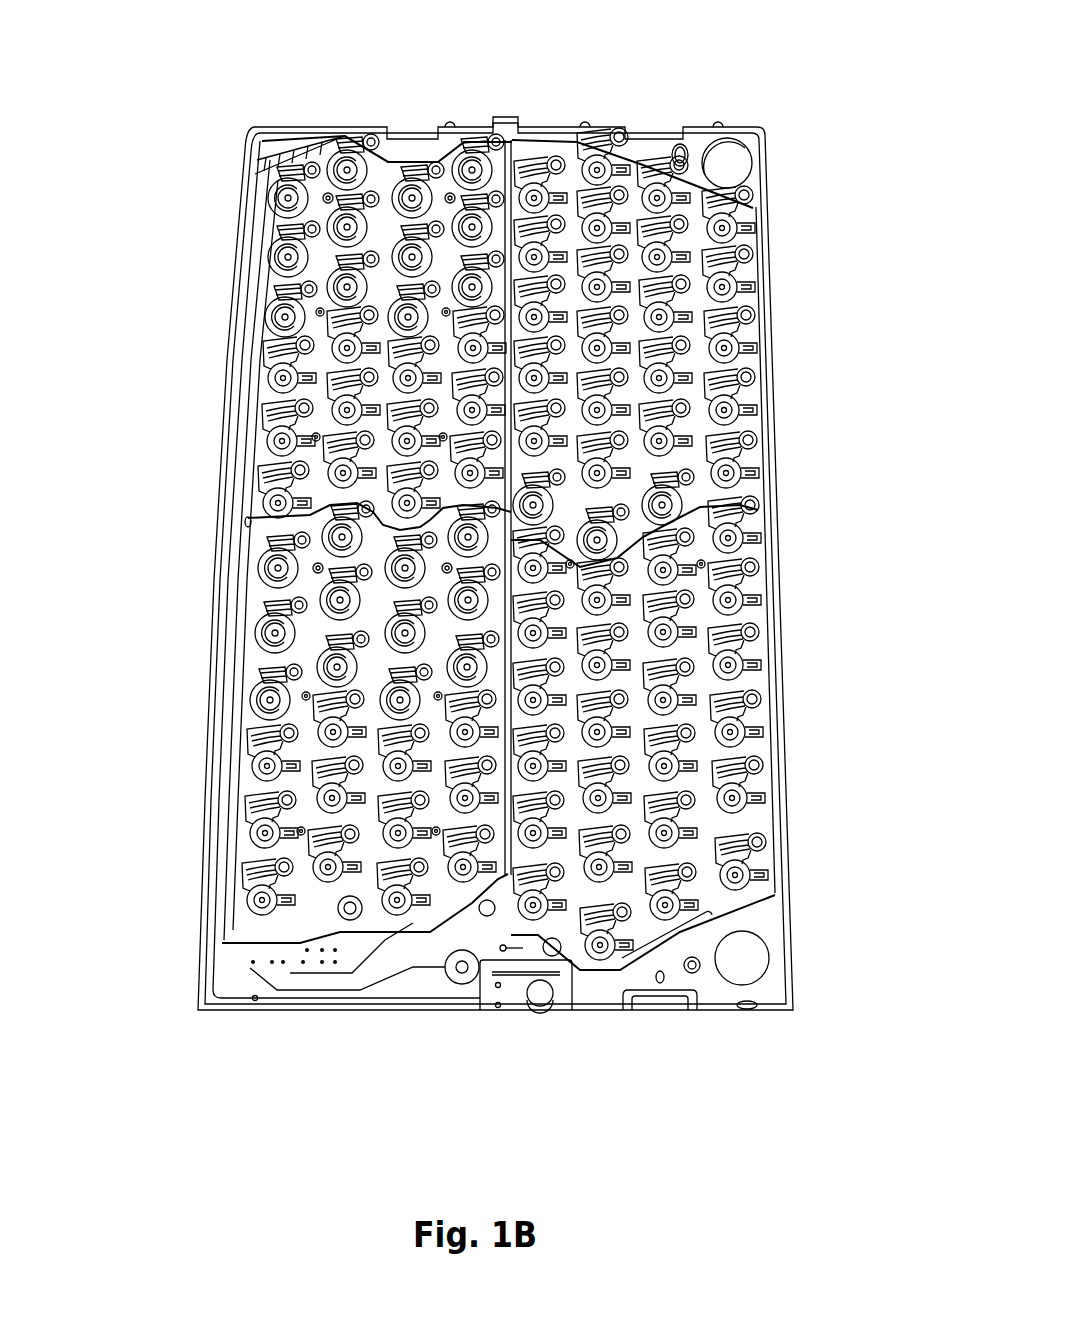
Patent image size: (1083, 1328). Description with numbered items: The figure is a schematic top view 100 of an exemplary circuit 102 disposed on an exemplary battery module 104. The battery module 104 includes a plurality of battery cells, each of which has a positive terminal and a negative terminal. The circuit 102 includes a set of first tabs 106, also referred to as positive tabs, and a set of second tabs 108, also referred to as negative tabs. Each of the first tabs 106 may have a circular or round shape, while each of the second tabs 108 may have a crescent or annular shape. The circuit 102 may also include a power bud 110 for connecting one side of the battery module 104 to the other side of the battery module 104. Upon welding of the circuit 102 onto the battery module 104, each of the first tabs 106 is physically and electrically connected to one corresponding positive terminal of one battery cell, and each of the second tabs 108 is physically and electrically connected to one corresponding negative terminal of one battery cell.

The top view 100 is at (808, 66).
The circuit 102 is at (318, 170).
The battery module 104 is at (415, 145).
The first tabs 106 is at (337, 670).
The second tabs 108 is at (410, 604).
The power bud 110 is at (462, 976).